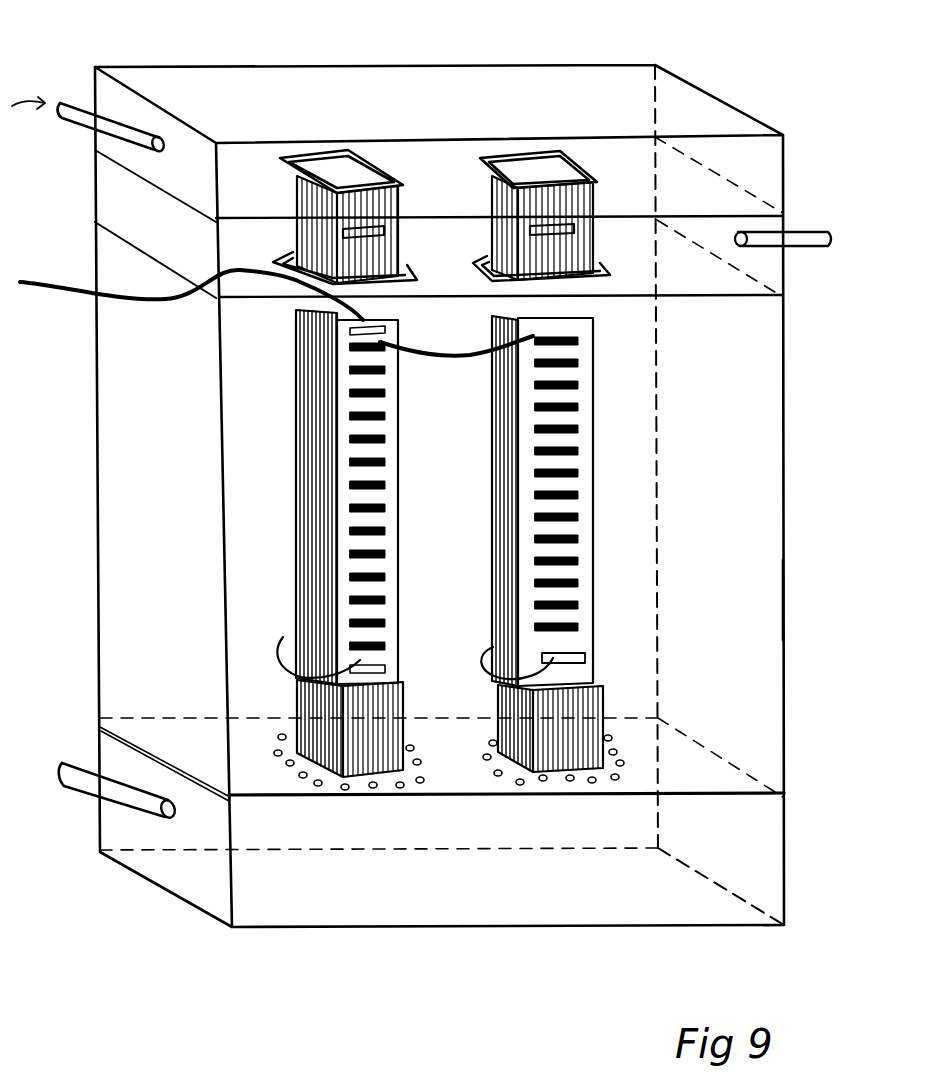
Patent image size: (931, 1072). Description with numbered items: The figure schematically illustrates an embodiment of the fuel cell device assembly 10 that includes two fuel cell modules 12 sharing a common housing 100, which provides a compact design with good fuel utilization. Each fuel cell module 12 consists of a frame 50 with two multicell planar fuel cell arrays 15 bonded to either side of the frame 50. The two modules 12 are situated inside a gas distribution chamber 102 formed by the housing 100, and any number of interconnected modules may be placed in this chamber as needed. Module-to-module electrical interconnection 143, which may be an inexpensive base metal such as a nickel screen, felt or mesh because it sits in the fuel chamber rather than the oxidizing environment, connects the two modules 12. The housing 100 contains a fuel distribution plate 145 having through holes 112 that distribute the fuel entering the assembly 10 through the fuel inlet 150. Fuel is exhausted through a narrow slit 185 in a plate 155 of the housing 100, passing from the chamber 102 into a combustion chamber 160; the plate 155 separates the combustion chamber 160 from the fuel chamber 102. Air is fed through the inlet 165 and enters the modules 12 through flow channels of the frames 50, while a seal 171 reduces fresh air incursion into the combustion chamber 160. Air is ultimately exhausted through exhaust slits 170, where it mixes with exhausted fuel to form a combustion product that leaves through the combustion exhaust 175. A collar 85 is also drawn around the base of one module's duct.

The fuel cell device assembly 10 is at (808, 68).
The fuel cell module 12 is at (601, 577).
The fuel cell array 15 is at (337, 358).
The frame 50 is at (311, 506).
The collar 85 is at (475, 264).
The housing 100 is at (783, 667).
The gas distribution chamber 102 is at (735, 612).
The through holes 112 is at (623, 763).
The electrical interconnection 143 is at (432, 357).
The fuel distribution plate 145 is at (742, 794).
The fuel inlet 150 is at (170, 812).
The plate 155 is at (750, 283).
The combustion chamber 160 is at (717, 275).
The air inlet 165 is at (112, 113).
The exhaust slits 170 is at (492, 153).
The seal 171 is at (524, 232).
The combustion exhaust 175 is at (787, 231).
The narrow slit 185 is at (293, 254).